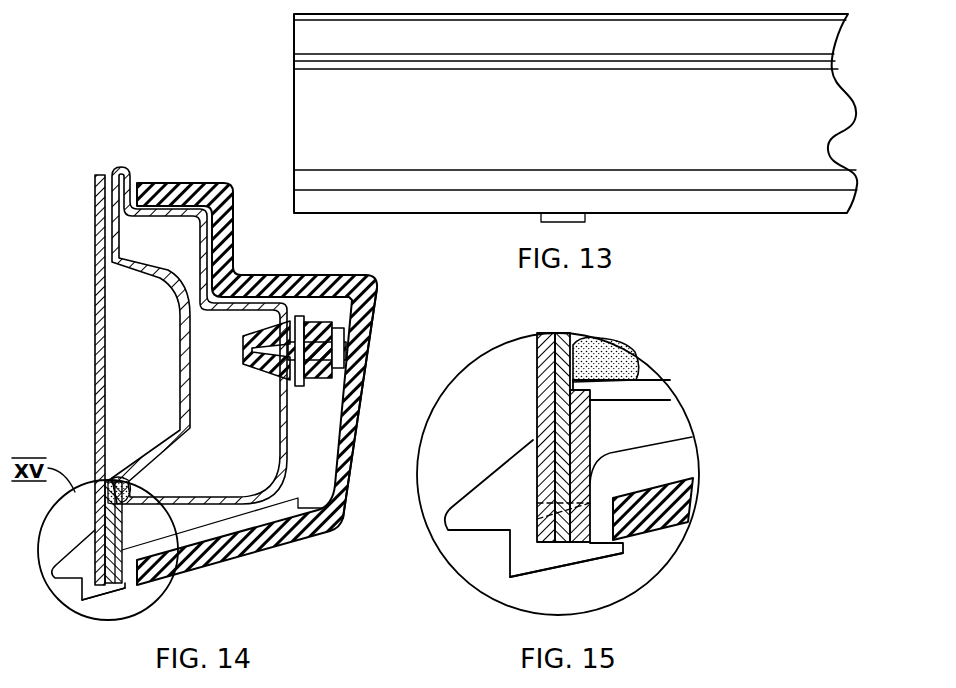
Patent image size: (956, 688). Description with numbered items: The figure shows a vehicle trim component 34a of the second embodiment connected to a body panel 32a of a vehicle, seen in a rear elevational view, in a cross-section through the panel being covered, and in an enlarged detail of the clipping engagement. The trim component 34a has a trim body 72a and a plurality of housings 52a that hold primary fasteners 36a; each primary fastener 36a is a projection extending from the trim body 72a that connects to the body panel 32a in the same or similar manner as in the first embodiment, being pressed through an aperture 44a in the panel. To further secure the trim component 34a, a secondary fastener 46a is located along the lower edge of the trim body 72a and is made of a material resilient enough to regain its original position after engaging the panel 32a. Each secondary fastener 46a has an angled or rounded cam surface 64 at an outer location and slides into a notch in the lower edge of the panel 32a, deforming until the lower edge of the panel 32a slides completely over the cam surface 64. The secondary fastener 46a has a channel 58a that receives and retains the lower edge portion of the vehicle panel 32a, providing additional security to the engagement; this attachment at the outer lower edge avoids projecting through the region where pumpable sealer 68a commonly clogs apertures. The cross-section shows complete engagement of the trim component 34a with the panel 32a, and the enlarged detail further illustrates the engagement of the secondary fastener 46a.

In FIG. 14, the body panel 32a is at (95, 212).
In FIG. 15, the body panel 32a is at (537, 377).
In FIG. 14, the vehicle trim component 34a is at (258, 207).
In FIG. 15, the vehicle trim component 34a is at (662, 530).
In FIG. 14, the primary fastener 36a is at (250, 340).
In FIG. 14, the fastener 44a is at (278, 370).
In FIG. 13, the secondary fastener 46a is at (585, 217).
In FIG. 14, the secondary fastener 46a is at (86, 540).
In FIG. 15, the secondary fastener 46a is at (537, 470).
In FIG. 14, the housing 52a is at (333, 328).
In FIG. 14, the channel 58a is at (94, 590).
In FIG. 15, the channel 58a is at (535, 527).
In FIG. 14, the cam surface 64 is at (60, 562).
In FIG. 15, the cam surface 64 is at (462, 492).
In FIG. 14, the adhesive 68a is at (120, 480).
In FIG. 15, the adhesive 68a is at (605, 355).
In FIG. 14, the trim body 72a is at (372, 320).